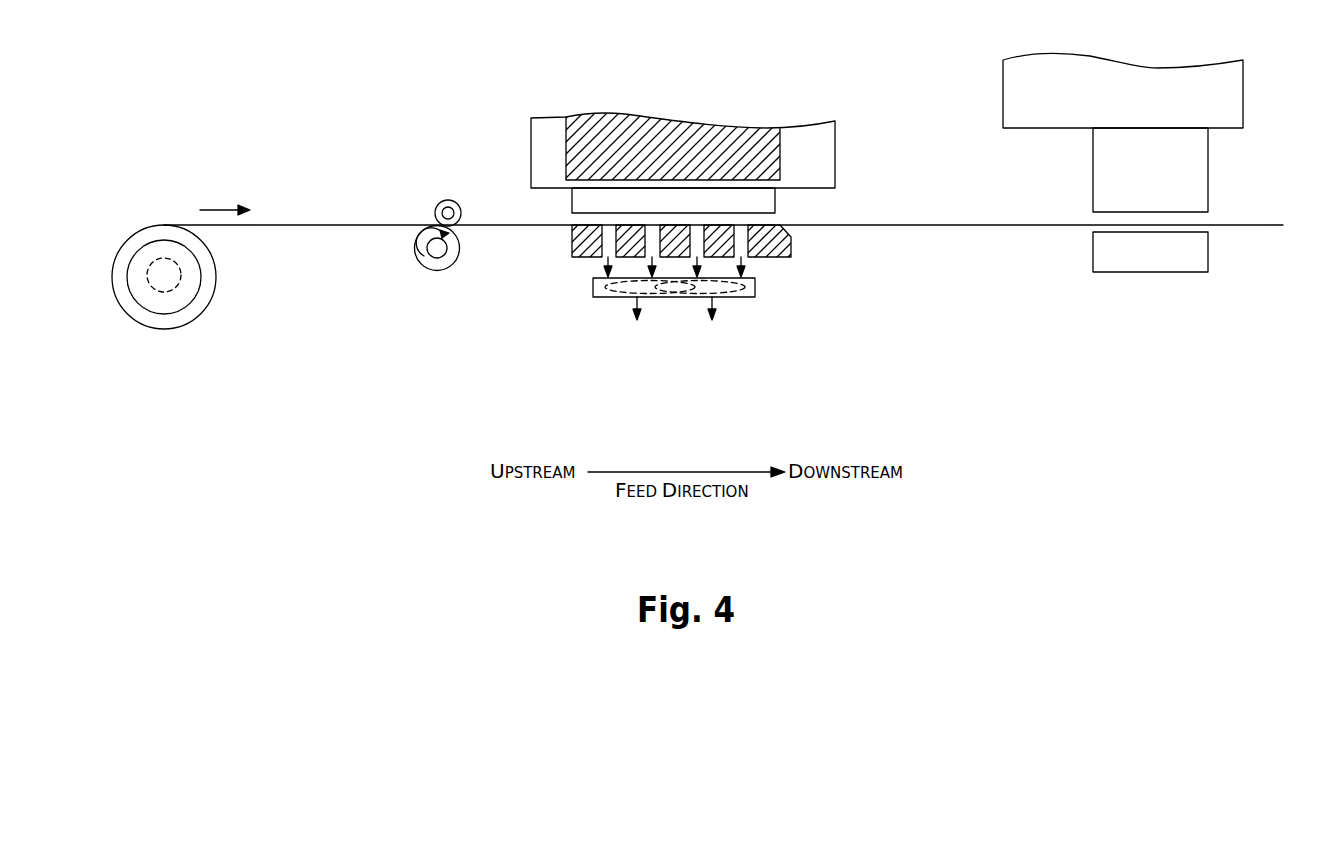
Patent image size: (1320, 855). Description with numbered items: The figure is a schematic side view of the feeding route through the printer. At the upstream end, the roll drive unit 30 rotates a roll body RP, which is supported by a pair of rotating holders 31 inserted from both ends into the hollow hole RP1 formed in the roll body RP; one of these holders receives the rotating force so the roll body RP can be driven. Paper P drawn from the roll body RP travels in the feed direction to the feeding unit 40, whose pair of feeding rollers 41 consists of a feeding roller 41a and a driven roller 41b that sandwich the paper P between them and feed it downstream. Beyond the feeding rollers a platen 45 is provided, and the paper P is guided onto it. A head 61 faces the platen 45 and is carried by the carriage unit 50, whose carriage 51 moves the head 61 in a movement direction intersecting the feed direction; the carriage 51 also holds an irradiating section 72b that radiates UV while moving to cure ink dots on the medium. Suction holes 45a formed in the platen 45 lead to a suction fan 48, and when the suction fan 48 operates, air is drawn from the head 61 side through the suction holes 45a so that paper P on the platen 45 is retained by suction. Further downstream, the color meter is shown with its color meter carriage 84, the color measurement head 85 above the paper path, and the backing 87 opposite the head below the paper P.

The roll drive unit 30 is at (164, 262).
The roll body RP is at (212, 293).
The hollow hole RP1 is at (147, 273).
The rotating holder 31 is at (163, 314).
The paper P is at (302, 223).
The feeding unit 40 is at (417, 215).
The pair of feeding rollers 41 is at (444, 234).
The feeding roller 41a is at (437, 271).
The driven roller 41b is at (446, 200).
The carriage unit 50 is at (683, 116).
The carriage 51 is at (550, 125).
The irradiating section 72b is at (680, 127).
The head 61 is at (775, 198).
The platen 45 is at (704, 300).
The suction hole 45a is at (747, 258).
The suction fan 48 is at (693, 293).
The color meter carriage 84 is at (1157, 68).
The color measurement head 85 is at (1210, 170).
The backing 87 is at (1142, 273).